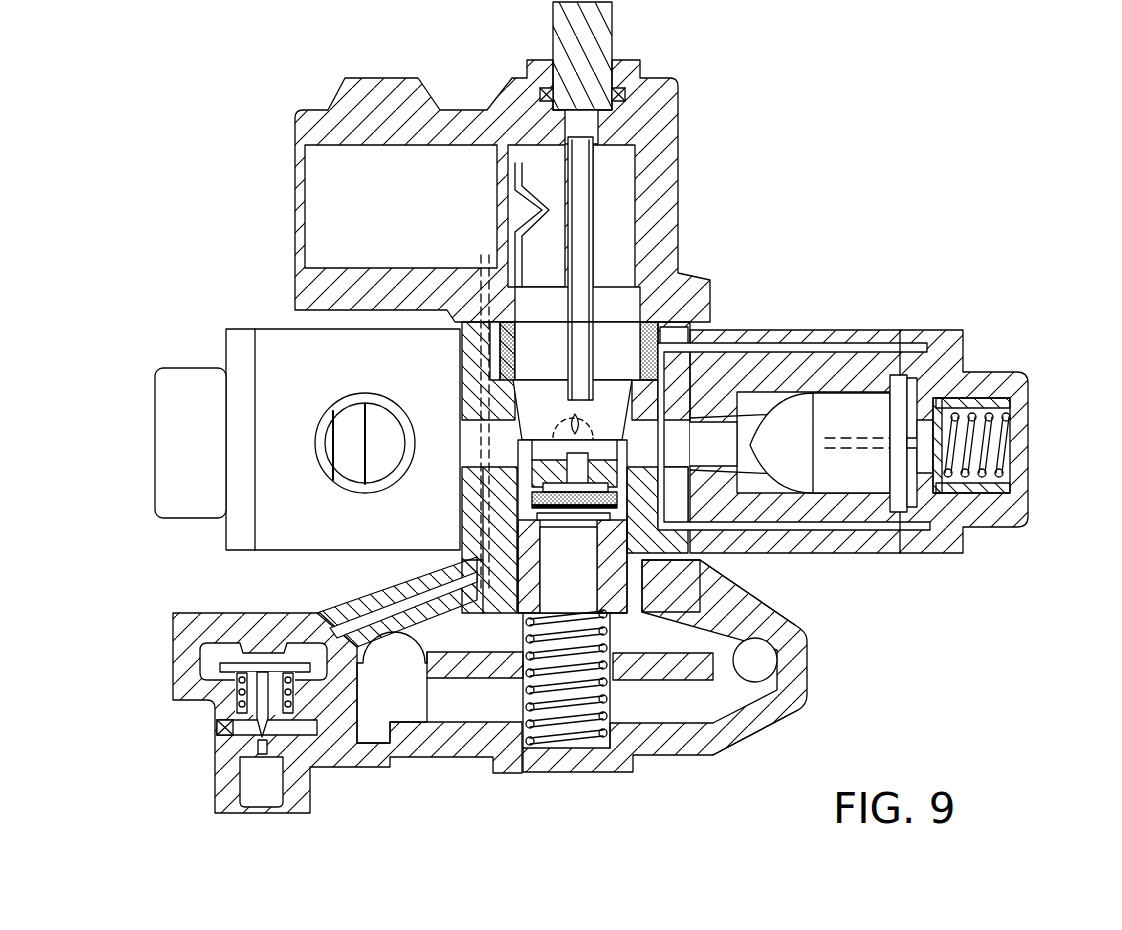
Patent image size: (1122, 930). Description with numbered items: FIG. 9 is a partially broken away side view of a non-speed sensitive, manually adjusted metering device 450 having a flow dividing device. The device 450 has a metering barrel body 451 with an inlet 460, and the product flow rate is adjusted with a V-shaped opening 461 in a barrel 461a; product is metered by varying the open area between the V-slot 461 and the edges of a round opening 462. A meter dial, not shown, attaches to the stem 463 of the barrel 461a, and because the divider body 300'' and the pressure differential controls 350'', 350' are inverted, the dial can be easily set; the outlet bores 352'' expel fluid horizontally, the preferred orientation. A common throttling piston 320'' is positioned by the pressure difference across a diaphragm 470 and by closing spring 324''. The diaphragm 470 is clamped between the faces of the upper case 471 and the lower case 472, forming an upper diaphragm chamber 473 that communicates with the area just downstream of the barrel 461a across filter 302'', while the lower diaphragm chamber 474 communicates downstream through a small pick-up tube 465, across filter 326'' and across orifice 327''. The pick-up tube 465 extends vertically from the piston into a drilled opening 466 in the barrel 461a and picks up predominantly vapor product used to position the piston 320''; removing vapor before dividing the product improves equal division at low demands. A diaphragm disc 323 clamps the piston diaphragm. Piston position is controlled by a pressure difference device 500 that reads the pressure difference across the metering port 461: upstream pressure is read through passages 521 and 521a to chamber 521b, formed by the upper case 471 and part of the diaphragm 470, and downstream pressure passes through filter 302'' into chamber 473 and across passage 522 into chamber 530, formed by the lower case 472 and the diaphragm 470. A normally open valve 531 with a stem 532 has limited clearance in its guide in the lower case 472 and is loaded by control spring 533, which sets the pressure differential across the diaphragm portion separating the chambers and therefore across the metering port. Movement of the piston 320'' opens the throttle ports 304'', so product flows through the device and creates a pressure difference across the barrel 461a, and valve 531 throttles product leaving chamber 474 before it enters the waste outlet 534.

The manually-adjusted metering device 450 is at (208, 112).
The metering barrel body 451 is at (343, 96).
The inlet 460 is at (320, 181).
The V-shaped opening 461 is at (524, 210).
The barrel 461a is at (615, 240).
The round opening 462 is at (507, 182).
The stem 463 is at (603, 38).
The pick-up tube 465 is at (592, 206).
The drilled opening 466 is at (588, 126).
The filter 302'' is at (703, 349).
The throttle ports 304'' is at (595, 427).
The throttling piston 320'' is at (542, 522).
The filter 326'' is at (502, 508).
The restricting orifice 327'' is at (568, 568).
The closing spring 324'' is at (594, 707).
The diaphragm disc 323 is at (660, 682).
The divider body 300'' is at (707, 585).
The pressure differential controls 350'' is at (264, 439).
The outlet bores 352'' is at (363, 462).
The pressure differential controls 350' is at (885, 441).
The diaphragm 470 is at (412, 648).
The upper case 471 is at (802, 630).
The lower case 472 is at (805, 694).
The upper diaphragm chamber 473 is at (720, 625).
The lower diaphragm chamber 474 is at (470, 705).
The pressure difference device 500 is at (100, 728).
The passage 521 is at (372, 595).
The passage 521a is at (481, 256).
The chamber 521b is at (208, 652).
The passage 522 is at (322, 603).
The chamber 530 is at (205, 675).
The normally open valve 531 is at (215, 738).
The stem 532 is at (232, 706).
The control spring 533 is at (300, 710).
The waste outlet 534 is at (263, 812).